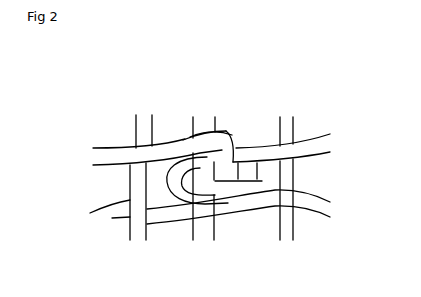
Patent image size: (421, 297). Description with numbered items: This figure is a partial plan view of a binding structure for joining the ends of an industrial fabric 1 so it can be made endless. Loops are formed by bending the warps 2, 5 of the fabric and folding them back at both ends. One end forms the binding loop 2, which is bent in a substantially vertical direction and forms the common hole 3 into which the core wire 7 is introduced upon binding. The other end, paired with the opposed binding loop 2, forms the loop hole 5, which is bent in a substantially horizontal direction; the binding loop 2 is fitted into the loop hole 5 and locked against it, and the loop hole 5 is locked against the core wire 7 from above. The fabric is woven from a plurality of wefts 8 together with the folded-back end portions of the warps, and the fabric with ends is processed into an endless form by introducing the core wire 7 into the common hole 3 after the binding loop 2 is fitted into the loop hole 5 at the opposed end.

The weft yarn 1 is at (178, 132).
The binding loop 2 is at (229, 134).
The common hole 3 is at (168, 184).
The loop hole 5 is at (244, 133).
The core wire 7 is at (215, 230).
The weft 8 is at (127, 232).